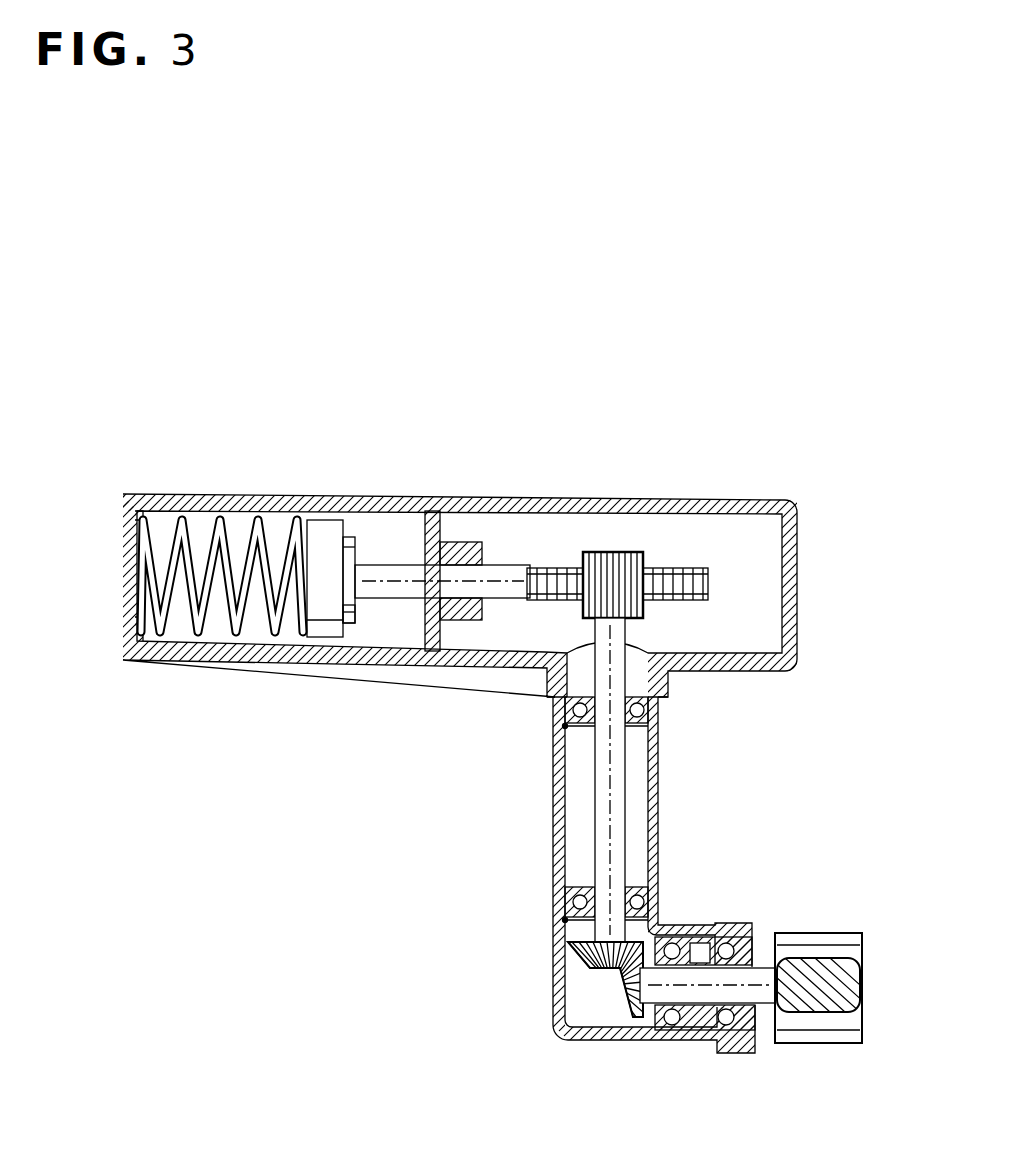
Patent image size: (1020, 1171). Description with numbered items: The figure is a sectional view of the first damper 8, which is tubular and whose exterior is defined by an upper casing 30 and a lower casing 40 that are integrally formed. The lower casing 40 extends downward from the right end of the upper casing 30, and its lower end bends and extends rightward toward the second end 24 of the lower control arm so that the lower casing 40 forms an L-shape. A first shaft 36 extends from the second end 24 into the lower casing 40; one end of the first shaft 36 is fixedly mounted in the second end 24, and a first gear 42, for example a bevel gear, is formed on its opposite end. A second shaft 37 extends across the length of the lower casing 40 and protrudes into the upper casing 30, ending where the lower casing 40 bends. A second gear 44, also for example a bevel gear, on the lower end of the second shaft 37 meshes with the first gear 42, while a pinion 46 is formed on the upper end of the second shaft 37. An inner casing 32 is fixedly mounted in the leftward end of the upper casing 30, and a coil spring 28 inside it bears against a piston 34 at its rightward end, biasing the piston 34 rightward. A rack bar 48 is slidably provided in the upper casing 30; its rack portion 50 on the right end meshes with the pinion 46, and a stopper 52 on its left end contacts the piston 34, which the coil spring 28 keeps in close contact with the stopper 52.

The first damper 8 is at (203, 453).
The second end of the lower control arm 24 is at (860, 928).
The coil spring 28 is at (251, 497).
The upper casing 30 is at (432, 497).
The inner casing 32 is at (322, 497).
The piston 34 is at (367, 497).
The first shaft 36 is at (710, 987).
The second shaft 37 is at (615, 785).
The lower casing 40 is at (668, 830).
The first gear 42 is at (627, 1007).
The second gear 44 is at (585, 958).
The pinion 46 is at (617, 553).
The rack bar 48 is at (500, 575).
The rack portion 50 is at (682, 568).
The stopper 52 is at (348, 624).